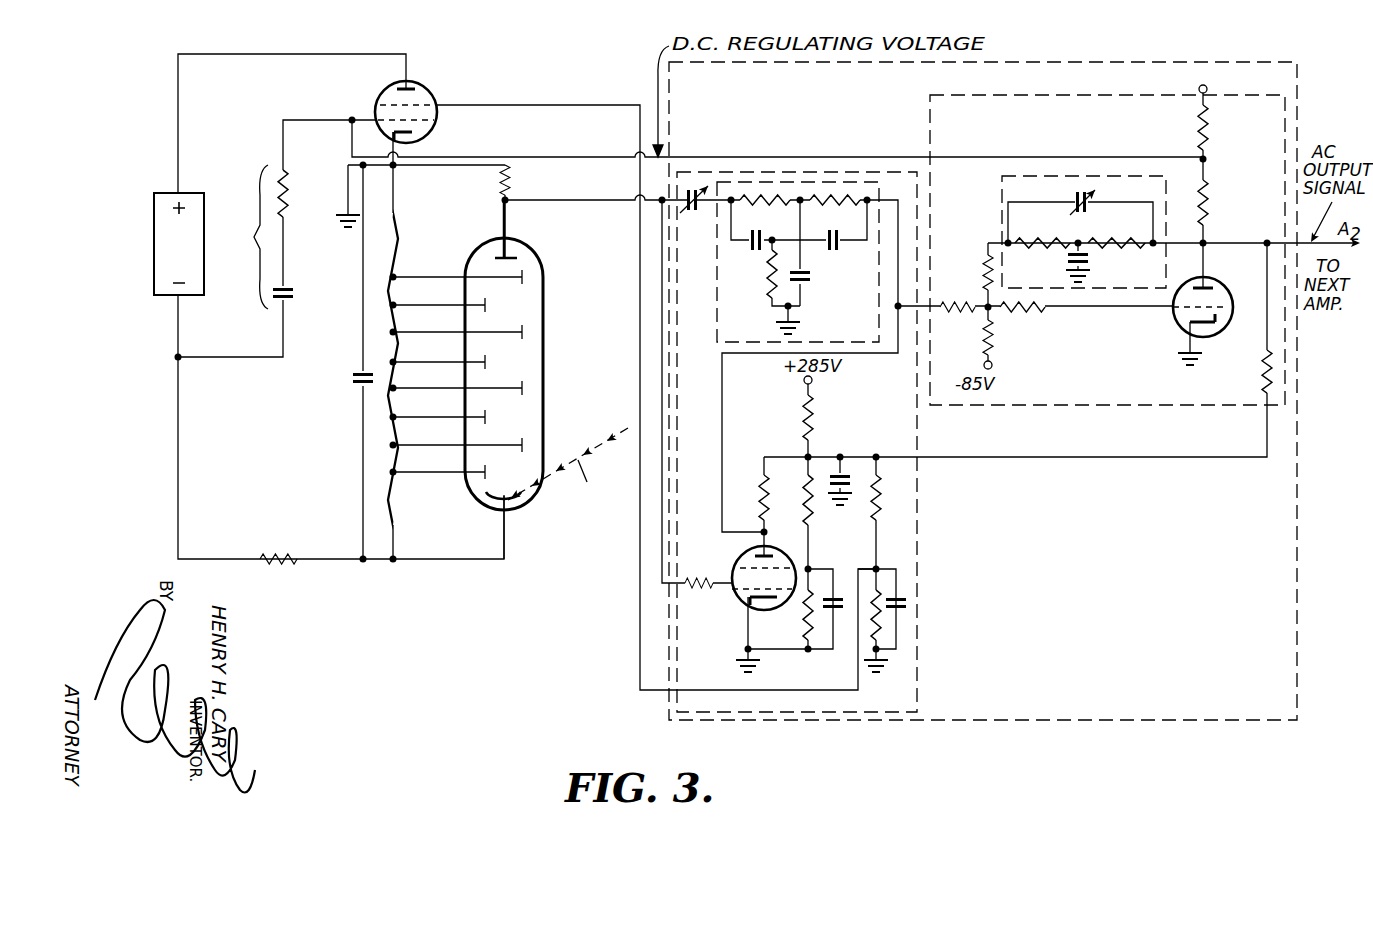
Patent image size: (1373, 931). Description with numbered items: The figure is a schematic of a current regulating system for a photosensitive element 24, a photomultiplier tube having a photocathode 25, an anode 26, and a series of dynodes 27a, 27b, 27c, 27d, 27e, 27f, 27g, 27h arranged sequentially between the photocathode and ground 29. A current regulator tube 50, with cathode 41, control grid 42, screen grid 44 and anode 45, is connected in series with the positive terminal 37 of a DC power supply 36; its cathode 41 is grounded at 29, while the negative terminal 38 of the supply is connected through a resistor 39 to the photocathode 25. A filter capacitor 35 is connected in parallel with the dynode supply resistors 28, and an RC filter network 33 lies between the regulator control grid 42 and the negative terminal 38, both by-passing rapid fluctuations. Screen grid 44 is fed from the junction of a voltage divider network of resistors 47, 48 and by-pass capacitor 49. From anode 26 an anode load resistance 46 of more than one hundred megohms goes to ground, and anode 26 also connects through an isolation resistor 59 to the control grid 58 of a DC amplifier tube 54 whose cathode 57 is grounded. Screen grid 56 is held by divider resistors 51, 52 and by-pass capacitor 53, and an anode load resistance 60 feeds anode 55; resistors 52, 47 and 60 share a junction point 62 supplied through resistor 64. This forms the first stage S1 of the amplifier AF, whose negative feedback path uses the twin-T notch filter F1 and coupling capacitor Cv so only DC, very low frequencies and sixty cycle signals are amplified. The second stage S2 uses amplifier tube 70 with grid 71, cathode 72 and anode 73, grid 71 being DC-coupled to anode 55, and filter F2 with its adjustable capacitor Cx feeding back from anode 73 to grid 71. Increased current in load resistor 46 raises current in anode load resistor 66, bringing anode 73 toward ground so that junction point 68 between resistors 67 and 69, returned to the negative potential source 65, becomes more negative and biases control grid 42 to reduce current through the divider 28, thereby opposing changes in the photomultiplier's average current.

The photosensitive element 24 is at (468, 249).
The photocathode 25 is at (510, 500).
The anode 26 is at (502, 254).
The dynode 27a is at (480, 482).
The dynode 27b is at (528, 446).
The dynode 27c is at (478, 421).
The dynode 27d is at (528, 388).
The dynode 27e is at (478, 366).
The dynode 27f is at (528, 332).
The dynode 27g is at (475, 310).
The dynode 27h is at (535, 283).
The dynode supply resistors 28 is at (400, 310).
The ground 29 is at (345, 215).
The RC filter network 33 is at (262, 237).
The filter capacitor 35 is at (358, 378).
The DC power supply 36 is at (158, 260).
The positive terminal 37 is at (176, 192).
The negative terminal 38 is at (178, 296).
The resistor 39 is at (283, 550).
The cathode 41 is at (413, 130).
The control grid 42 is at (380, 118).
The screen grid 44 is at (424, 102).
The anode 45 is at (408, 88).
The anode load resistance 46 is at (511, 182).
The voltage divider resistor 47 is at (877, 502).
The voltage divider resistor 48 is at (883, 600).
The by-pass capacitor 49 is at (908, 604).
The current regulator tube 50 is at (404, 100).
The voltage divider resistor 51 is at (804, 620).
The voltage divider resistor 52 is at (806, 490).
The by-pass capacitor 53 is at (848, 615).
The DC amplifier tube 54 is at (749, 578).
The anode 55 is at (768, 552).
The screen grid 56 is at (778, 566).
The cathode 57 is at (752, 603).
The control grid 58 is at (742, 590).
The isolation or current limiting resistor 59 is at (704, 581).
The anode load resistance 60 is at (767, 487).
The junction point 62 is at (876, 457).
The resistor 64 is at (802, 420).
The source of negative potential 65 is at (1208, 90).
The anode load resistor 66 is at (1260, 380).
The resistor 67 is at (1208, 195).
The junction point 68 is at (1206, 160).
The resistor 69 is at (1196, 120).
The DC amplifier tube 70 is at (1200, 304).
The grid 71 is at (1185, 310).
The cathode 72 is at (1210, 326).
The anode 73 is at (1208, 284).
The adjustable coupling capacitor Cv is at (690, 207).
The adjustable capacitor Cx is at (1083, 209).
The notch filter F1 is at (878, 323).
The filter F2 is at (1165, 283).
The first stage S1 is at (917, 510).
The second stage S2 is at (1070, 400).
The amplifier AF is at (1100, 718).